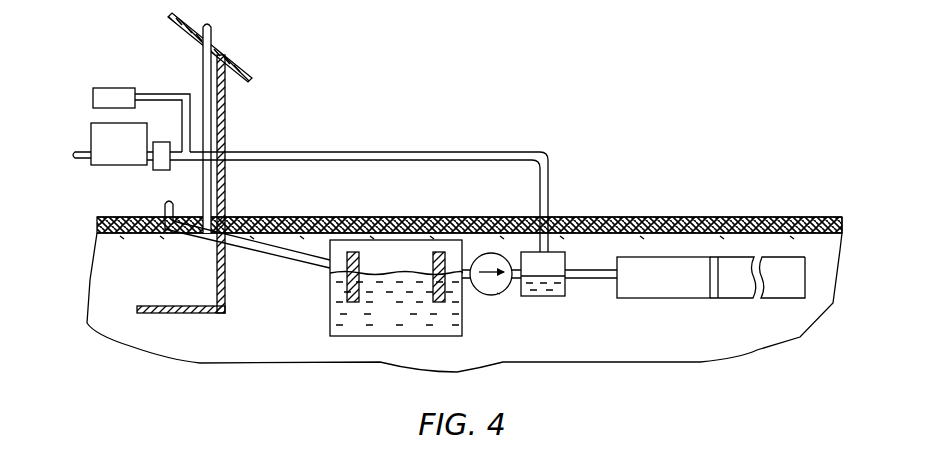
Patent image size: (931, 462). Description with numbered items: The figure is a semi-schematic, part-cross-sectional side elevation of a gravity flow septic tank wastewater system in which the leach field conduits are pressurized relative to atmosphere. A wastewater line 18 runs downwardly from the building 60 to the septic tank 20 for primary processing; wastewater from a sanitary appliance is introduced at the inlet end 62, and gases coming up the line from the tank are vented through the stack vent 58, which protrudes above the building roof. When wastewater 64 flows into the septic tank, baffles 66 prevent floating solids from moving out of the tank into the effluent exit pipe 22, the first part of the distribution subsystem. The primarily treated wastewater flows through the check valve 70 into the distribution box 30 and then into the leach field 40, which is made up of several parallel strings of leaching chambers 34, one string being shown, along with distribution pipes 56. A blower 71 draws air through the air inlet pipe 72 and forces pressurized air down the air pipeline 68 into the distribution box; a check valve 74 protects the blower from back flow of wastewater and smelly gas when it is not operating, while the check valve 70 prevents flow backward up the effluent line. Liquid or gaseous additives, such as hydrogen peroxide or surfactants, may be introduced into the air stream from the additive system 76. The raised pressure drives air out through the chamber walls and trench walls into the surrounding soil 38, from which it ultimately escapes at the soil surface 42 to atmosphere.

The wastewater line 18 is at (273, 257).
The septic tank 20 is at (392, 337).
The effluent exit pipe 22 is at (469, 268).
The distribution box 30 is at (557, 297).
The leaching chambers 34 is at (670, 298).
The soil 38 is at (815, 261).
The leach field 40 is at (690, 247).
The soil surface 42 is at (600, 217).
The distribution pipes 56 is at (593, 279).
The stack vent 58 is at (212, 33).
The building 60 is at (226, 101).
The inlet end 62 is at (163, 201).
The wastewater 64 is at (381, 318).
The baffles 66 is at (346, 298).
The air pipeline 68 is at (410, 152).
The check valve 70 is at (500, 293).
The blower 71 is at (91, 128).
The air inlet pipe 72 is at (81, 161).
The check valve 74 is at (160, 142).
The additive system 76 is at (113, 88).